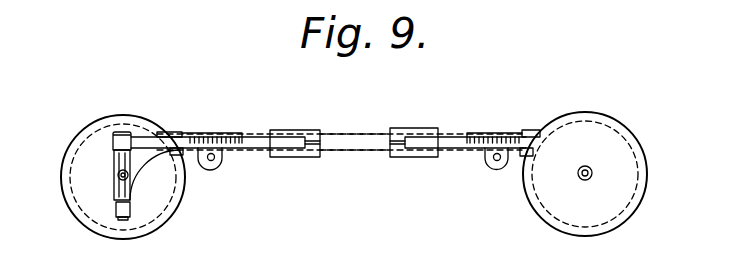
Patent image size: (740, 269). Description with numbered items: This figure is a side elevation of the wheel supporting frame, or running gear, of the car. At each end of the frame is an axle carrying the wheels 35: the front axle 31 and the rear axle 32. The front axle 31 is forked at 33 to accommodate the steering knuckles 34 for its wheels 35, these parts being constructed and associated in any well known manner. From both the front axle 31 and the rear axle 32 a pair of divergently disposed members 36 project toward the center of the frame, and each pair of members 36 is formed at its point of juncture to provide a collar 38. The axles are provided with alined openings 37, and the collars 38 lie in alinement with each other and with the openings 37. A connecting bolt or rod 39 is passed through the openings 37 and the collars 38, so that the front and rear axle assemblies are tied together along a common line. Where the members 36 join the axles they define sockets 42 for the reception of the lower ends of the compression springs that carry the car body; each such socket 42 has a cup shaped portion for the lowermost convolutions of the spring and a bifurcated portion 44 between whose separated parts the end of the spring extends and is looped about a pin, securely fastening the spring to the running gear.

The front axle 31 is at (592, 172).
The rear axle 32 is at (117, 175).
The fork 33 is at (125, 143).
The steering knuckle 34 is at (127, 160).
The wheel 35 is at (123, 128).
The divergently disposed member 36 is at (282, 141).
The alined opening 37 is at (293, 140).
The collar 38 is at (273, 130).
The connecting bolt or rod 39 is at (347, 128).
The socket 42 is at (205, 133).
The bifurcated portion 44 is at (222, 160).